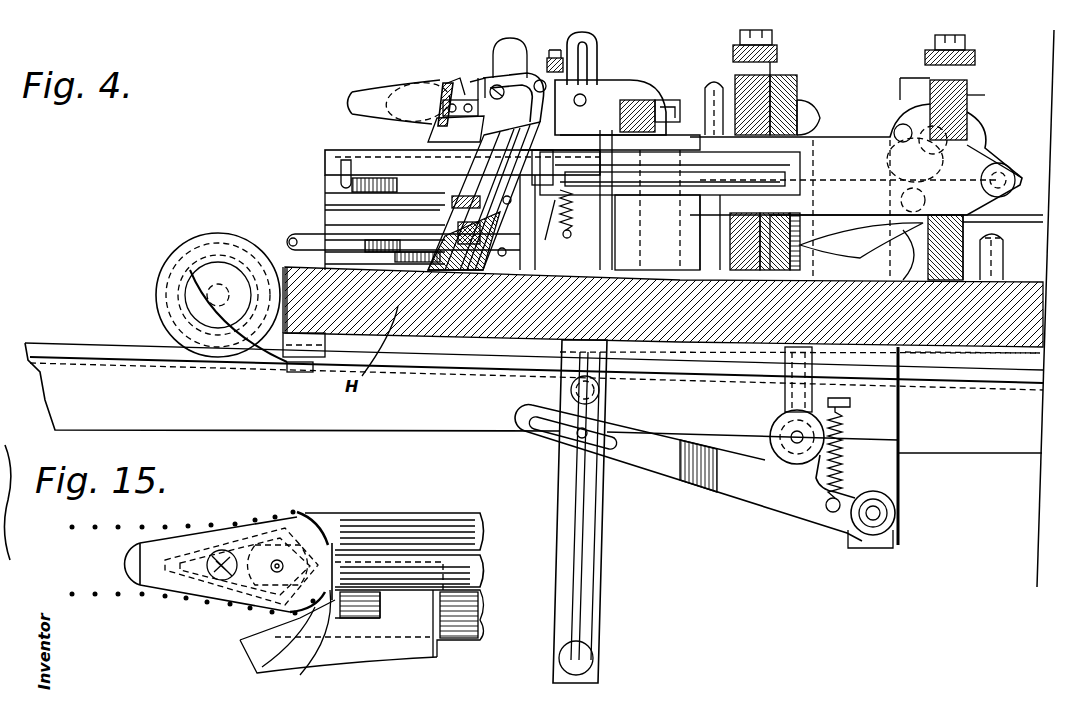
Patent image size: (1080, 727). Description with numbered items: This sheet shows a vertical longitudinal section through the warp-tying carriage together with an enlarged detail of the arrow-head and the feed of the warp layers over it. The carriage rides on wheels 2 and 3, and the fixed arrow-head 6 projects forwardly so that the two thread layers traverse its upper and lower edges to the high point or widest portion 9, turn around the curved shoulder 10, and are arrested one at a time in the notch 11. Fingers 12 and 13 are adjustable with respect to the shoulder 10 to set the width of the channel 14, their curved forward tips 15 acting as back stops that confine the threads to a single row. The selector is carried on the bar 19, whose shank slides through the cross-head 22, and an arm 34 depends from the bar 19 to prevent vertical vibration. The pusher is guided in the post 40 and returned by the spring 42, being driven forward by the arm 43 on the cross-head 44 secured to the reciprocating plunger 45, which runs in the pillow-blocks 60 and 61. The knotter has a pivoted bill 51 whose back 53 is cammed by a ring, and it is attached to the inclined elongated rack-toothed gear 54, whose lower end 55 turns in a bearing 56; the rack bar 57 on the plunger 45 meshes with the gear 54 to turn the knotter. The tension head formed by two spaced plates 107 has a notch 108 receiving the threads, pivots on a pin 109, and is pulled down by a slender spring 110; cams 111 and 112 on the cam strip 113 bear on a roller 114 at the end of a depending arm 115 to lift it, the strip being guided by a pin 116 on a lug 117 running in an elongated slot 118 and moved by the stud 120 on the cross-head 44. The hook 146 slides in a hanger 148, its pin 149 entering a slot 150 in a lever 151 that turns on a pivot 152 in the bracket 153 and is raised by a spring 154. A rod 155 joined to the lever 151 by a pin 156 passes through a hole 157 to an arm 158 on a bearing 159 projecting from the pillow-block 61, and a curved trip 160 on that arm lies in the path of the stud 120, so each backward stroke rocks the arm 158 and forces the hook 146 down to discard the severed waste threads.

In FIG. 4, the wheel 2 is at (160, 312).
In FIG. 15, the wheel 3 is at (238, 524).
In FIG. 4, the arrow-head 6 is at (352, 102).
In FIG. 15, the arrow-head 6 is at (118, 565).
In FIG. 4, the high point or widest portion 9 is at (445, 84).
In FIG. 4, the curved or rounded shoulder 10 is at (454, 78).
In FIG. 15, the curved or rounded shoulder 10 is at (300, 514).
In FIG. 4, the notch 11 is at (465, 80).
In FIG. 15, the notch 11 is at (312, 524).
In FIG. 4, the finger 12 is at (488, 74).
In FIG. 15, the finger 12 is at (386, 520).
In FIG. 15, the finger 13 is at (460, 642).
In FIG. 4, the channel 14 is at (475, 80).
In FIG. 15, the channel 14 is at (306, 518).
In FIG. 15, the curved forward tip 15 is at (252, 618).
In FIG. 15, the bar 19 is at (480, 566).
In FIG. 4, the cross-head 22 is at (905, 78).
In FIG. 15, the arm 34 is at (408, 650).
In FIG. 4, the post 40 is at (708, 118).
In FIG. 4, the spring 42 is at (660, 105).
In FIG. 4, the arm 43 is at (777, 92).
In FIG. 4, the cross-head 44 is at (800, 92).
In FIG. 4, the reciprocating plunger 45 is at (856, 192).
In FIG. 4, the pivoted bill 51 is at (553, 56).
In FIG. 4, the back of the pivoted bill 53 is at (602, 85).
In FIG. 4, the elongated rack-toothed gear 54 is at (470, 200).
In FIG. 4, the lower end of the elongated gear 55 is at (455, 224).
In FIG. 4, the bearing 56 is at (506, 204).
In FIG. 4, the rack bar 57 is at (378, 162).
In FIG. 4, the pillow-block 60 is at (737, 75).
In FIG. 4, the rear pillow-block 61 is at (967, 97).
In FIG. 4, the spaced plates 107 is at (508, 48).
In FIG. 4, the notch 108 is at (546, 76).
In FIG. 4, the pin 109 is at (640, 100).
In FIG. 4, the slender spring 110 is at (567, 236).
In FIG. 4, the cam 111 is at (442, 196).
In FIG. 4, the cam 112 is at (604, 227).
In FIG. 4, the cam strip 113 is at (680, 246).
In FIG. 4, the roller 114 is at (670, 194).
In FIG. 4, the arm 115 is at (666, 175).
In FIG. 4, the pin 116 is at (452, 238).
In FIG. 4, the lug 117 is at (412, 250).
In FIG. 4, the elongated slot 118 is at (292, 236).
In FIG. 4, the stud 120 is at (808, 264).
In FIG. 4, the hook 146 is at (600, 42).
In FIG. 4, the hanger 148 is at (593, 544).
In FIG. 4, the pin 149 is at (582, 433).
In FIG. 4, the slot 150 is at (536, 425).
In FIG. 4, the lever 151 is at (765, 497).
In FIG. 4, the pivot 152 is at (880, 513).
In FIG. 4, the bracket 153 is at (876, 423).
In FIG. 4, the spring 154 is at (842, 466).
In FIG. 4, the rod 155 is at (787, 397).
In FIG. 4, the pin 156 is at (790, 437).
In FIG. 4, the hole 157 is at (735, 347).
In FIG. 4, the arm 158 is at (894, 128).
In FIG. 4, the bearing 159 is at (970, 132).
In FIG. 4, the curved trip 160 is at (810, 243).